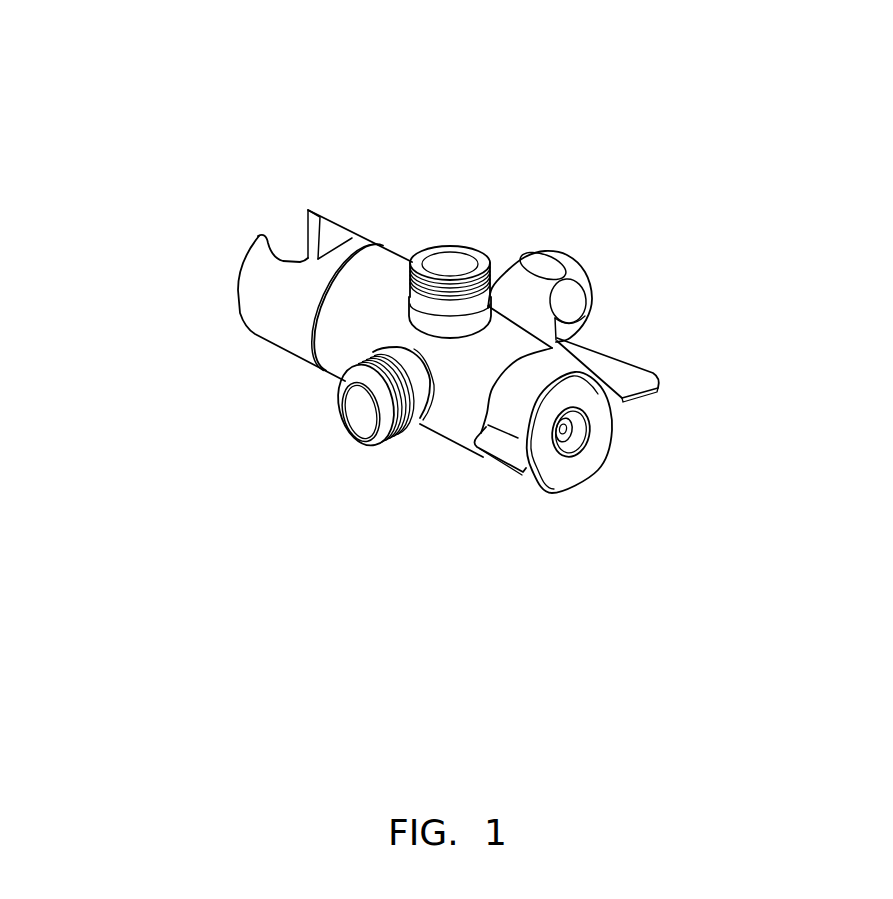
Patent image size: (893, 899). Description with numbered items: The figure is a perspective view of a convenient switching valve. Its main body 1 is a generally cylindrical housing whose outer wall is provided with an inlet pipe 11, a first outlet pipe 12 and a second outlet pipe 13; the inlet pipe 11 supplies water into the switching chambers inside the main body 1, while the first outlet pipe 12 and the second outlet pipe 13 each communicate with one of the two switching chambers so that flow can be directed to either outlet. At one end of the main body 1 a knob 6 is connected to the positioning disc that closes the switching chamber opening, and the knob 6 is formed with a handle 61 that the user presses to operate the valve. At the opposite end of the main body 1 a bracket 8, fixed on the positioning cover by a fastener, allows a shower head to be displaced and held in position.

The main body 1 is at (385, 292).
The bracket 8 is at (294, 296).
The second outlet pipe 13 is at (450, 265).
The first outlet pipe 12 is at (365, 418).
The inlet pipe 11 is at (525, 308).
The knob 6 is at (603, 434).
The handle 61 is at (612, 370).